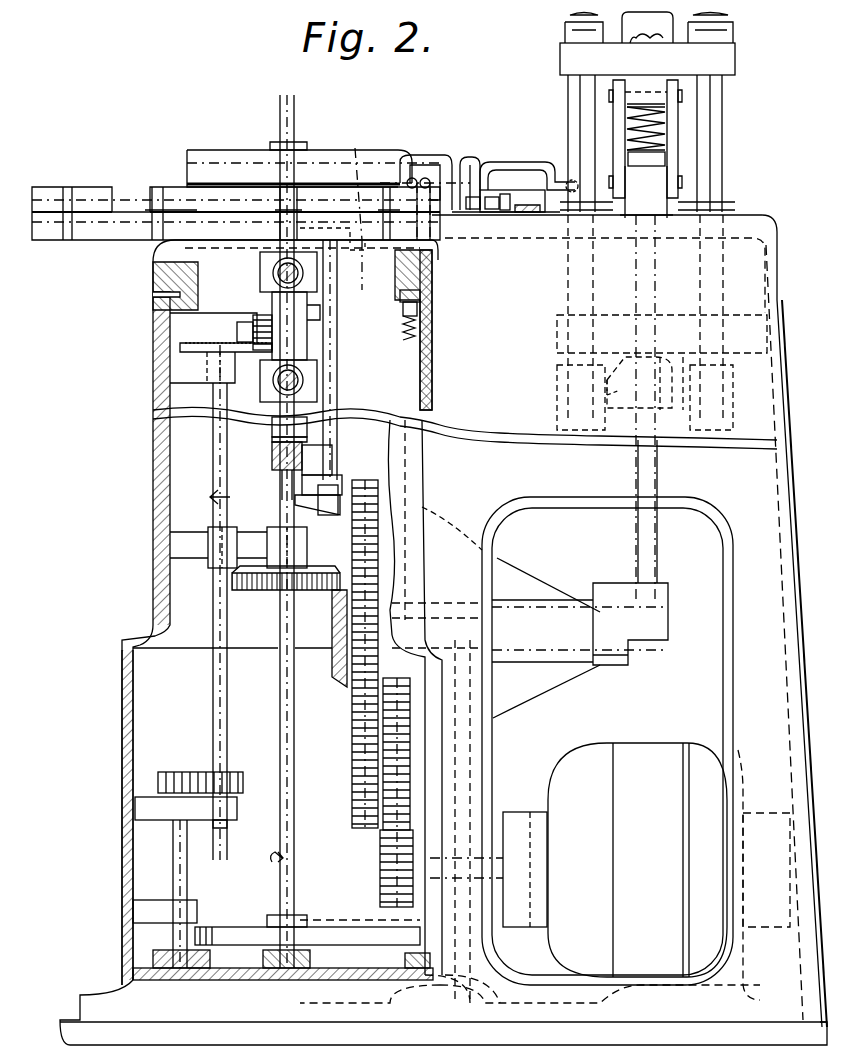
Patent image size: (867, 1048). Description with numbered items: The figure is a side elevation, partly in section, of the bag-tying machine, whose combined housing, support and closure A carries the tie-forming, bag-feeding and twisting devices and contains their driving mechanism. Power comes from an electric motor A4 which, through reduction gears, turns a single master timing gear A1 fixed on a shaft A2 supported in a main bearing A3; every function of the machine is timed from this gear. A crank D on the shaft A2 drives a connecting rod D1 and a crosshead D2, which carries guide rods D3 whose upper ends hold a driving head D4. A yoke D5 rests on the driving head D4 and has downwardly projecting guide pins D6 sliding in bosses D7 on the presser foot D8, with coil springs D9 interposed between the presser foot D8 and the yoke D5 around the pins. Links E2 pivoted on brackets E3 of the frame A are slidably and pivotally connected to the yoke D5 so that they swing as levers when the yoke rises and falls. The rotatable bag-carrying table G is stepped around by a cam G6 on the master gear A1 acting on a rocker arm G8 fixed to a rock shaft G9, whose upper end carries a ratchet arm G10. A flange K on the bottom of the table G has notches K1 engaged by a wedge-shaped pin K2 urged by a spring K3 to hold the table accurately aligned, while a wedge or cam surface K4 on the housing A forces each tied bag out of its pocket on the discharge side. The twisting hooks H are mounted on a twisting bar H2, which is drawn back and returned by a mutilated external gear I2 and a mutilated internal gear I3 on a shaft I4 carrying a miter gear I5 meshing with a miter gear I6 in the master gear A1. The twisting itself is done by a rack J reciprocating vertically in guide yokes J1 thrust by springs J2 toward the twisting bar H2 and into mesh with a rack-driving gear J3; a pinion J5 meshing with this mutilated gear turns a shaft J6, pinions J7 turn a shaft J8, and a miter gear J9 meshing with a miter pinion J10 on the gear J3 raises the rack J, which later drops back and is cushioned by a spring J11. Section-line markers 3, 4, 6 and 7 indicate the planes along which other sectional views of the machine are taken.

The combined housing, support, and closure A is at (153, 580).
The master timing gear A1 is at (356, 485).
The shaft A2 is at (540, 610).
The main bearing A3 is at (552, 668).
The electric motor A4 is at (655, 755).
The crank D is at (622, 645).
The connecting rod D1 is at (650, 540).
The crosshead D2 is at (658, 425).
The guide rods D3 is at (570, 85).
The driving head D4 is at (735, 62).
The yoke D5 is at (640, 85).
The guide pins D6 is at (662, 124).
The bosses D7 is at (662, 142).
The presser foot D8 is at (652, 160).
The coil springs D9 is at (665, 115).
The links E2 is at (613, 115).
The bracket E3 is at (665, 200).
The bag carrying table G is at (88, 245).
The cam G6 is at (300, 512).
The rocker arm G8 is at (282, 492).
The shaft G9 is at (338, 345).
The ratchet arm G10 is at (335, 205).
The hooks H is at (563, 178).
The twisting bar H2 is at (487, 165).
The mutilated external gear I2 is at (210, 925).
The mutilated internal gear I3 is at (405, 958).
The shaft I4 is at (294, 828).
The miter gear I5 is at (257, 592).
The miter gear I6 is at (338, 678).
The rack J is at (290, 140).
The guide yokes J1 is at (262, 262).
The springs J2 is at (303, 270).
The rack driving gear J3 is at (308, 315).
The pinion J5 is at (153, 958).
The shaft J6 is at (187, 860).
The pinions J7 is at (225, 770).
The shaft J8 is at (213, 678).
The miter gear J9 is at (180, 348).
The miter pinion J10 is at (262, 318).
The spring J11 is at (272, 440).
The flange K is at (425, 283).
The notches K1 is at (153, 292).
The wedge-shaped pin K2 is at (417, 313).
The spring K3 is at (417, 330).
The wedge or cam surface K4 is at (236, 185).
The section line 3 is at (277, 107).
The section line 4 is at (153, 932).
The section line 6 is at (187, 182).
The section line 7 is at (160, 225).